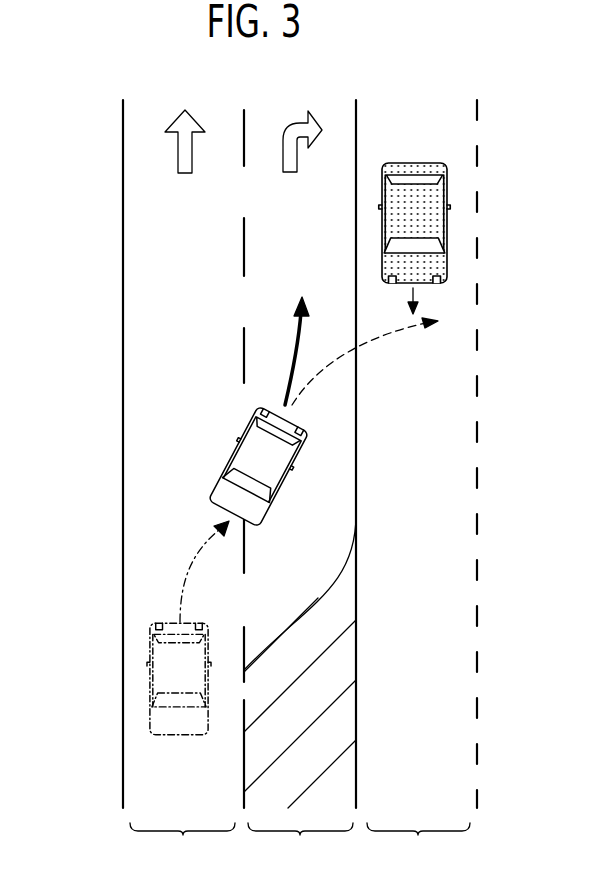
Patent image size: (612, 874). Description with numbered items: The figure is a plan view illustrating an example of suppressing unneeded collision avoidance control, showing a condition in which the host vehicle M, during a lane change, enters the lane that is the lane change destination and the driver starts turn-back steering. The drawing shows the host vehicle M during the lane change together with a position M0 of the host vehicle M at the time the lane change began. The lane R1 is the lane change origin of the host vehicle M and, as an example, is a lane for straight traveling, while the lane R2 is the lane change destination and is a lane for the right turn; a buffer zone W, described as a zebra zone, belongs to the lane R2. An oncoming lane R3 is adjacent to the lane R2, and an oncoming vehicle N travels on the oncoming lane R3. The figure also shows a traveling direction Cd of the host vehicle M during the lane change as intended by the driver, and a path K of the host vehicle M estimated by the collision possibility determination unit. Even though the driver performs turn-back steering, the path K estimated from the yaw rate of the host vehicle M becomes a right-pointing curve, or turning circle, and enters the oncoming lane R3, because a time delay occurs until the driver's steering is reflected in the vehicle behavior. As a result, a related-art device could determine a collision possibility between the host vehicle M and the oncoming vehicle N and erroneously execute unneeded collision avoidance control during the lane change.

The oncoming vehicle N is at (446, 200).
The path K is at (385, 338).
The host vehicle M is at (248, 418).
The traveling direction Cd is at (293, 340).
The position of the host vehicle M0 is at (152, 670).
The buffer zone W is at (337, 672).
The lane R1 is at (179, 487).
The lane R2 is at (298, 492).
The oncoming lane R3 is at (416, 487).